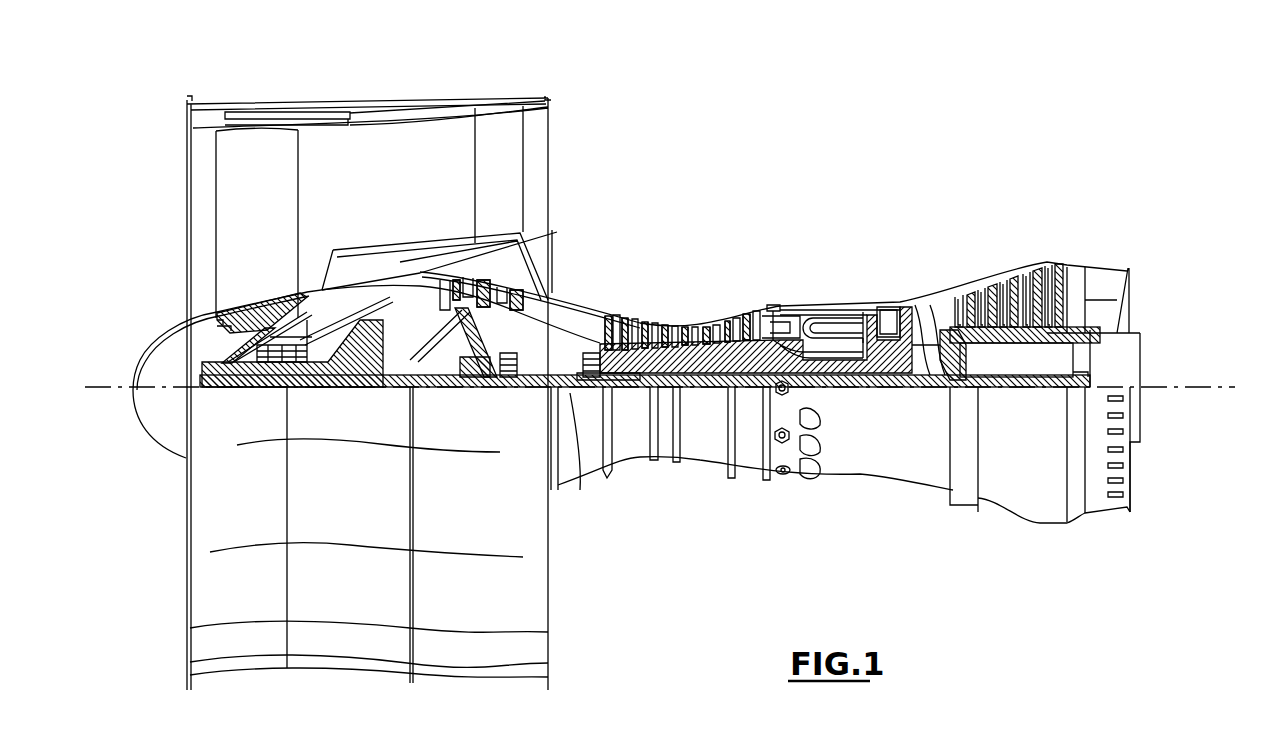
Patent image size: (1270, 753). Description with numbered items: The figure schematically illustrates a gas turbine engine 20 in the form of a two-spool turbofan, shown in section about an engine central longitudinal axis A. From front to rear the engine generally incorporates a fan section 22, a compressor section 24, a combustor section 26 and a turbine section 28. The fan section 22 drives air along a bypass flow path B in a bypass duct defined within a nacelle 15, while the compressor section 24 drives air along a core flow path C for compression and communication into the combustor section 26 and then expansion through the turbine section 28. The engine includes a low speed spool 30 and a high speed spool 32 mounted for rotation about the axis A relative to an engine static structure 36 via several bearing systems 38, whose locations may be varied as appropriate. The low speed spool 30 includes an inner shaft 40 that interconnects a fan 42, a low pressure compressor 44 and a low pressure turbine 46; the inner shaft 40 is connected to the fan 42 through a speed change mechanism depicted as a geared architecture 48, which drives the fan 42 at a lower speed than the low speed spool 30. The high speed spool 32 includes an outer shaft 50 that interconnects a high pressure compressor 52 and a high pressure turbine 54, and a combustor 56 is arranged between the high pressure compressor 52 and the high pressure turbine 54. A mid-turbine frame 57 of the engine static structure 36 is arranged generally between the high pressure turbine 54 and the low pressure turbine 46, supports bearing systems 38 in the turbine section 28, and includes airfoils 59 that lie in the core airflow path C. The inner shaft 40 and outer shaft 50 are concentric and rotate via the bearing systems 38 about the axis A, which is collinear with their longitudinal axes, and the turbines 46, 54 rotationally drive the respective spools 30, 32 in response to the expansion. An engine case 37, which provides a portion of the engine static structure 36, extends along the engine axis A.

The nacelle 15 is at (368, 108).
The gas turbine engine 20 is at (832, 150).
The fan section 22 is at (296, 88).
The compressor section 24 is at (604, 292).
The combustor section 26 is at (822, 278).
The turbine section 28 is at (976, 244).
The low speed spool 30 is at (707, 402).
The high speed spool 32 is at (747, 343).
The engine static structure 36 is at (749, 485).
The engine case 37 is at (915, 497).
The bearing systems 38 is at (507, 380).
The inner shaft 40 is at (575, 485).
The fan 42 is at (268, 232).
The low pressure compressor 44 is at (547, 238).
The low pressure turbine 46 is at (1015, 280).
The geared architecture 48 is at (370, 367).
The outer shaft 50 is at (836, 372).
The high pressure compressor 52 is at (683, 343).
The high pressure turbine 54 is at (889, 306).
The combustor 56 is at (822, 330).
The mid-turbine frame 57 is at (936, 288).
The airfoils 59 is at (960, 352).
The engine central longitudinal axis A is at (1222, 386).
The bypass flow path B is at (322, 177).
The core flow path C is at (362, 282).